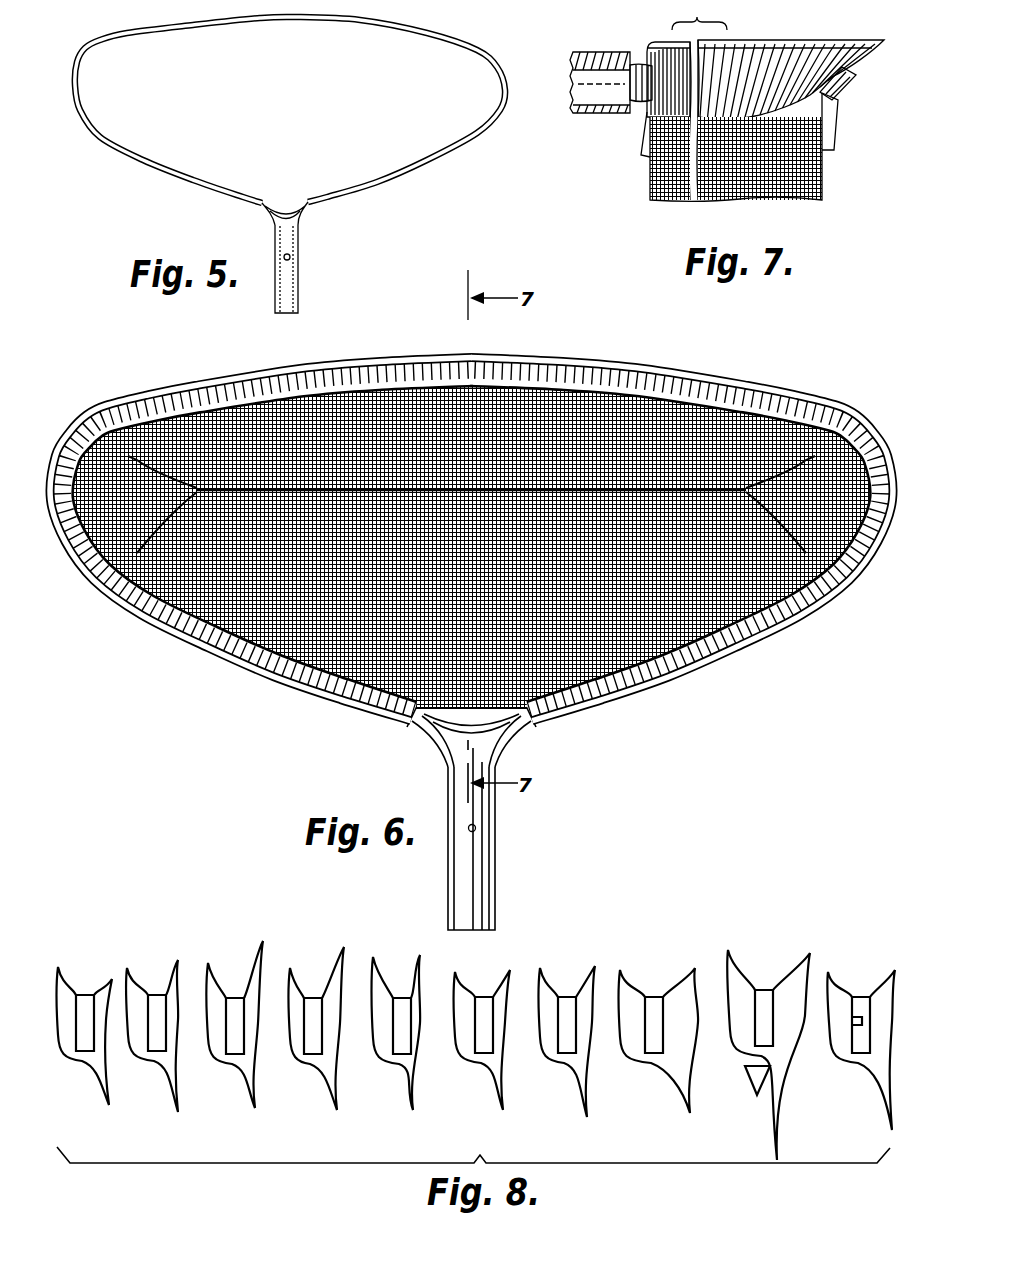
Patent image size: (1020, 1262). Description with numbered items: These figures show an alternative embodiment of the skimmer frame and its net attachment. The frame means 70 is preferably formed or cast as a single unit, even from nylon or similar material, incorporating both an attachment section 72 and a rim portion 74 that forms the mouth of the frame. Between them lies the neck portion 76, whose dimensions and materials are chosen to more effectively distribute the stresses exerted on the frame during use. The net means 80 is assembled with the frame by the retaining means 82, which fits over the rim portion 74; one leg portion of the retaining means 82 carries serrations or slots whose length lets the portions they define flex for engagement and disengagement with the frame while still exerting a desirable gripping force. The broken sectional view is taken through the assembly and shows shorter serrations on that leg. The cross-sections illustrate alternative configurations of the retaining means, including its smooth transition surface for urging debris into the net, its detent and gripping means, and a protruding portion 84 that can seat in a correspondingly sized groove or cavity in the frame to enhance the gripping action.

In FIG. 5, the frame means 70 is at (290, 165).
In FIG. 5, the attachment section 72 is at (300, 265).
In FIG. 6, the attachment section 72 is at (497, 850).
In FIG. 5, the rim portion 74 is at (172, 181).
In FIG. 5, the neck portion 76 is at (268, 212).
In FIG. 7, the neck portion 76 is at (608, 56).
In FIG. 6, the neck portion 76 is at (513, 734).
In FIG. 7, the net means 80 is at (643, 170).
In FIG. 6, the net means 80 is at (290, 663).
In FIG. 7, the retaining means 82 is at (870, 86).
In FIG. 6, the retaining means 82 is at (336, 718).
In FIG. 8, the protruding portion 84 is at (860, 1020).